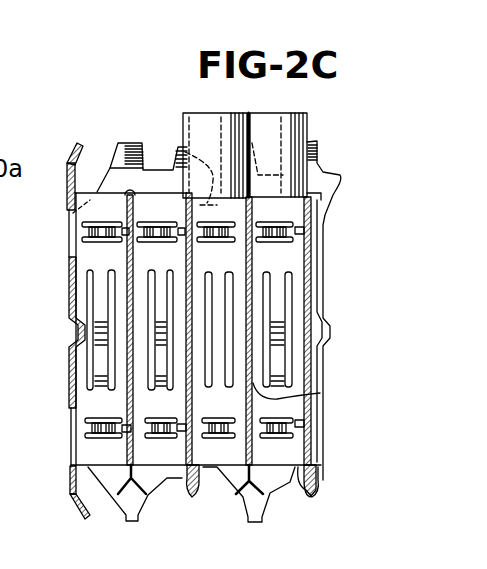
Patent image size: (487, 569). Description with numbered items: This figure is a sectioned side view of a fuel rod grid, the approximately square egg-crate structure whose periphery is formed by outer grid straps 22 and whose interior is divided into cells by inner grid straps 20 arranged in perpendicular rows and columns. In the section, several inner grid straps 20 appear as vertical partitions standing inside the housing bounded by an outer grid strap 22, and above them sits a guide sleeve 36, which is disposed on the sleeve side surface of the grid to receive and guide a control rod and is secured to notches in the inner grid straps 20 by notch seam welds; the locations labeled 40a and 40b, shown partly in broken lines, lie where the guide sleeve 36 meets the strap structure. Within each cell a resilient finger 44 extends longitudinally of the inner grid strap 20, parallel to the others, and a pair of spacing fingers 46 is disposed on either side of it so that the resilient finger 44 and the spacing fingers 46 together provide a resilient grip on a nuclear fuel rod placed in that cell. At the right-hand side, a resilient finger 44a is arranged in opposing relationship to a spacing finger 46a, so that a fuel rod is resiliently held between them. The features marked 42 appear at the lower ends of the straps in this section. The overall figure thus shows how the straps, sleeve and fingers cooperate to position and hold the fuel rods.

The inner grid strap 20 is at (310, 209).
The outer grid strap 22 is at (65, 182).
The guide sleeve 36 is at (217, 113).
The locking lug 40a is at (186, 209).
The hidden locking lug 40b is at (183, 149).
The contact fork 42 is at (235, 500).
The resilient finger 44 is at (105, 368).
The resilient finger 44a is at (320, 393).
The spacing finger 46 is at (100, 437).
The spacing finger 46a is at (305, 230).